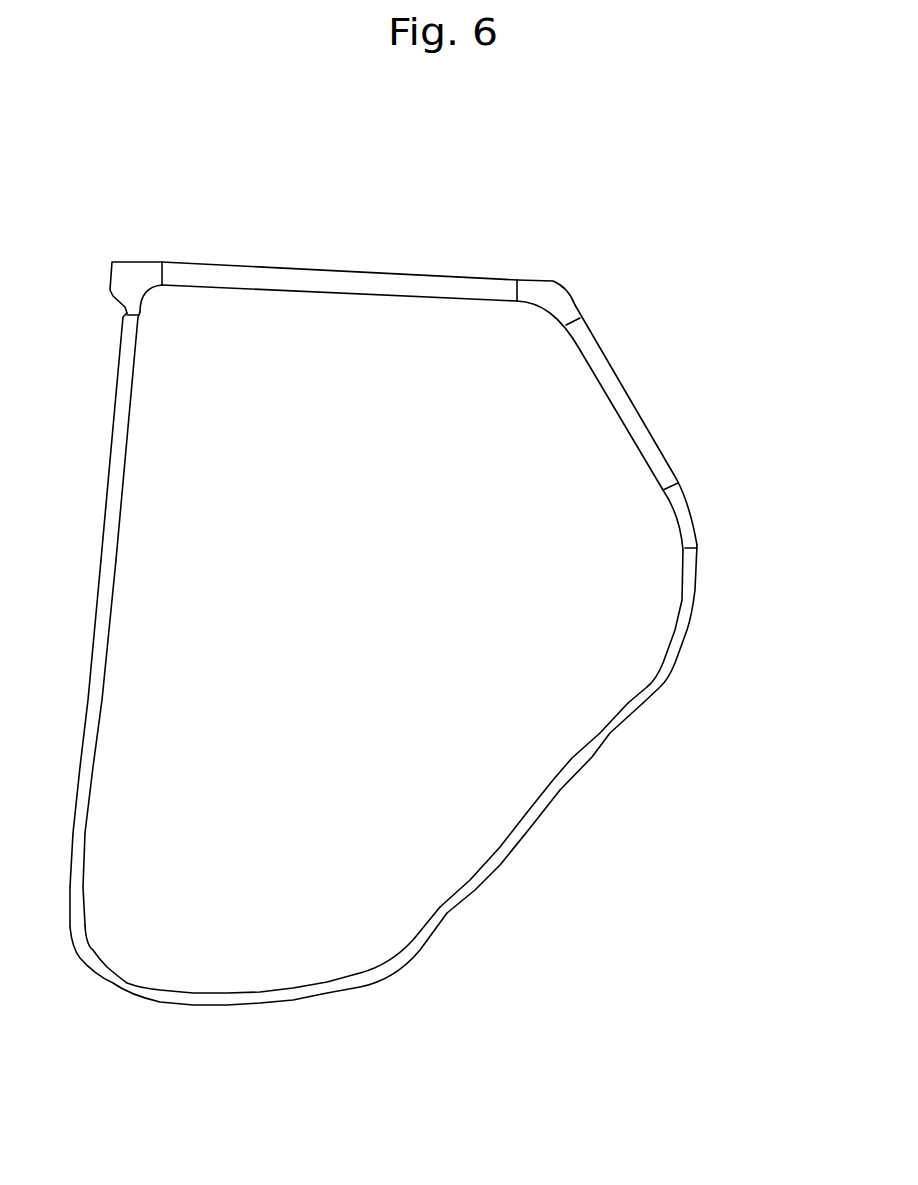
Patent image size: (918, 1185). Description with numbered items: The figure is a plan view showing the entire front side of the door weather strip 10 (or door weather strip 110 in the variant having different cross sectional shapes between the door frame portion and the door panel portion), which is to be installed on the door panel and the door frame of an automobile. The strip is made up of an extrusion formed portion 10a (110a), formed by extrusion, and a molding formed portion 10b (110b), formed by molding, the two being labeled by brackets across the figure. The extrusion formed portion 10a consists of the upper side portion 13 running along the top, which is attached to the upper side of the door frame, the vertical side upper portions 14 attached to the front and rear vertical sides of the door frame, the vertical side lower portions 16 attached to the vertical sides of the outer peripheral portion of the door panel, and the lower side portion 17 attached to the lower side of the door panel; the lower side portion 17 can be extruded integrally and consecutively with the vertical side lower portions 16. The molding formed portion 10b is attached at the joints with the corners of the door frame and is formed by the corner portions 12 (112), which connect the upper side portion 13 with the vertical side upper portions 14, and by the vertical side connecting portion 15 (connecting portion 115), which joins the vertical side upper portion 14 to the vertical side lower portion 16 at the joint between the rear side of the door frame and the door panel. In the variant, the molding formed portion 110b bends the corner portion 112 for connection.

The door weather strip 10 is at (436, 556).
The door weather strip 110 is at (489, 896).
The extrusion formed portion 10a is at (383, 633).
The extrusion formed portion 110a is at (228, 483).
The molding formed portion 10b is at (456, 322).
The molding formed portion 110b is at (413, 162).
The corner portion 12 is at (386, 251).
The corner portion 112 is at (140, 270).
The upper side portion 13 is at (282, 280).
The vertical side upper portion 14 is at (129, 391).
The vertical side connecting portion 15 is at (683, 351).
The connecting portion 115 is at (688, 503).
The vertical side lower portion 16 is at (92, 752).
The lower side portion 17 is at (245, 993).